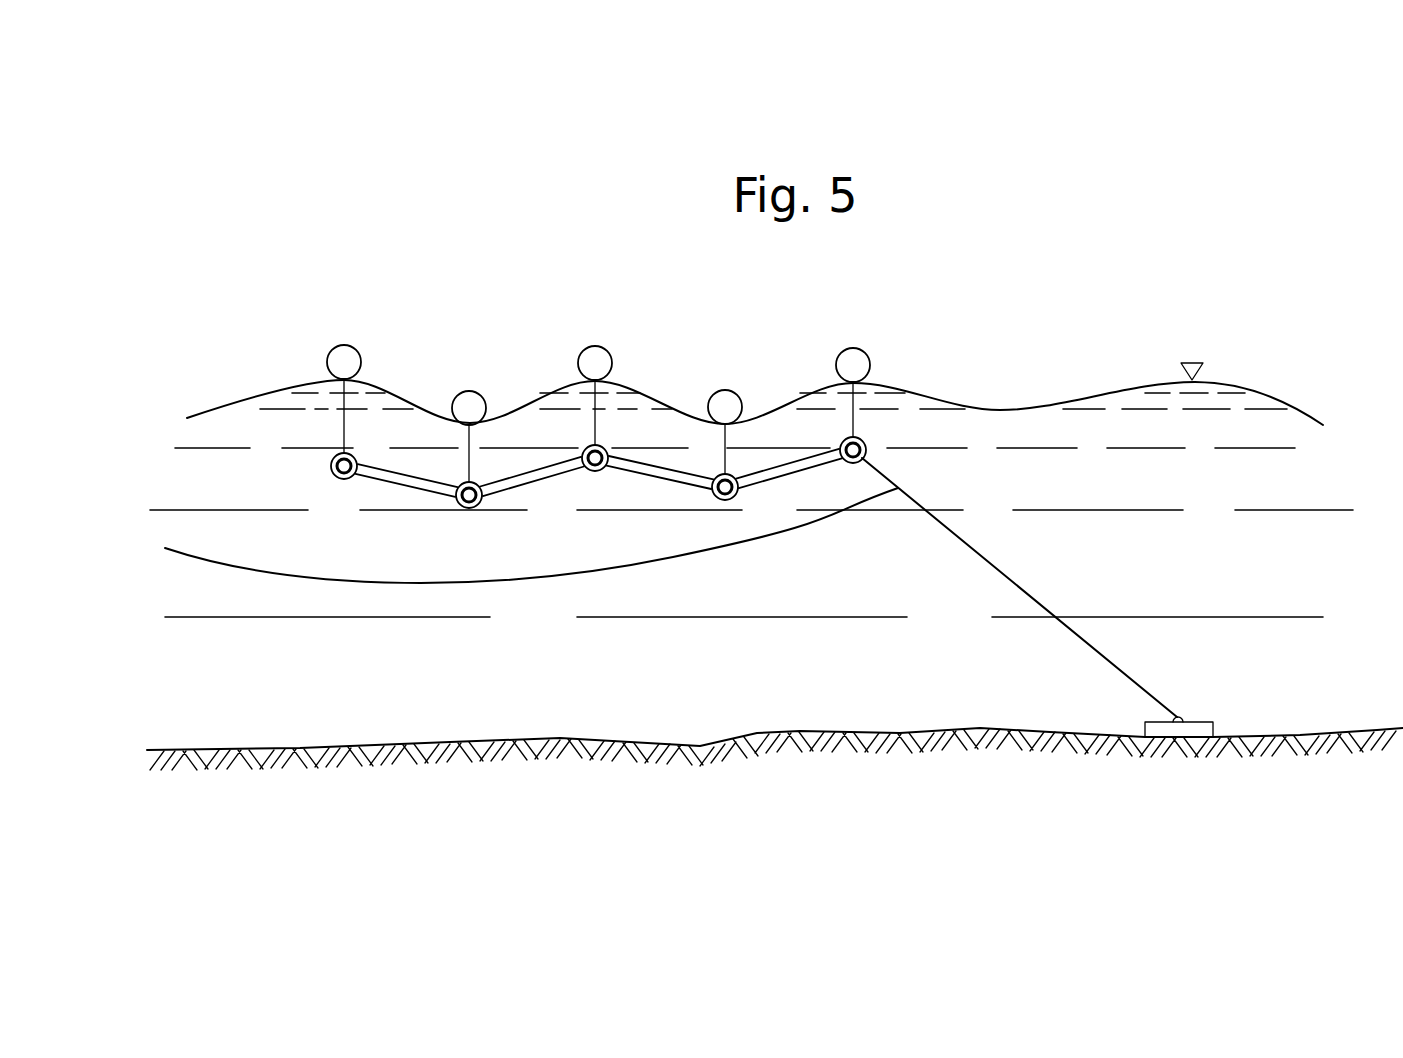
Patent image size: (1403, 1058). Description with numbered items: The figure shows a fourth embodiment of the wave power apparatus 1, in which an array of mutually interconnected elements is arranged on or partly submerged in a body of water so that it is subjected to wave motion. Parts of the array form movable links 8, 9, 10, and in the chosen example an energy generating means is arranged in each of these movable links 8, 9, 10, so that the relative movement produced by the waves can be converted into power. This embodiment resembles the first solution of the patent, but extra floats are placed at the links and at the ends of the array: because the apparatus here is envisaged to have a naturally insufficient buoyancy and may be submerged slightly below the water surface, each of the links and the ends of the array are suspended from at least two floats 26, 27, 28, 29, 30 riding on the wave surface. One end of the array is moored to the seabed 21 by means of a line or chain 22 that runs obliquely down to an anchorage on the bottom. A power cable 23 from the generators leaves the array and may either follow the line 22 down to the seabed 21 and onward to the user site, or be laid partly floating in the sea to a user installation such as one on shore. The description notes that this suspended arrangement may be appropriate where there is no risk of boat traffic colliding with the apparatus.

The wave power apparatus 1 is at (405, 500).
The movable link 8 is at (722, 503).
The movable link 9 is at (583, 485).
The movable link 10 is at (468, 525).
The seabed 21 is at (1293, 735).
The line or chain 22 is at (1017, 577).
The power cable 23 is at (673, 560).
The float 26 is at (855, 357).
The float 27 is at (725, 407).
The float 28 is at (595, 363).
The float 29 is at (466, 405).
The float 30 is at (344, 362).